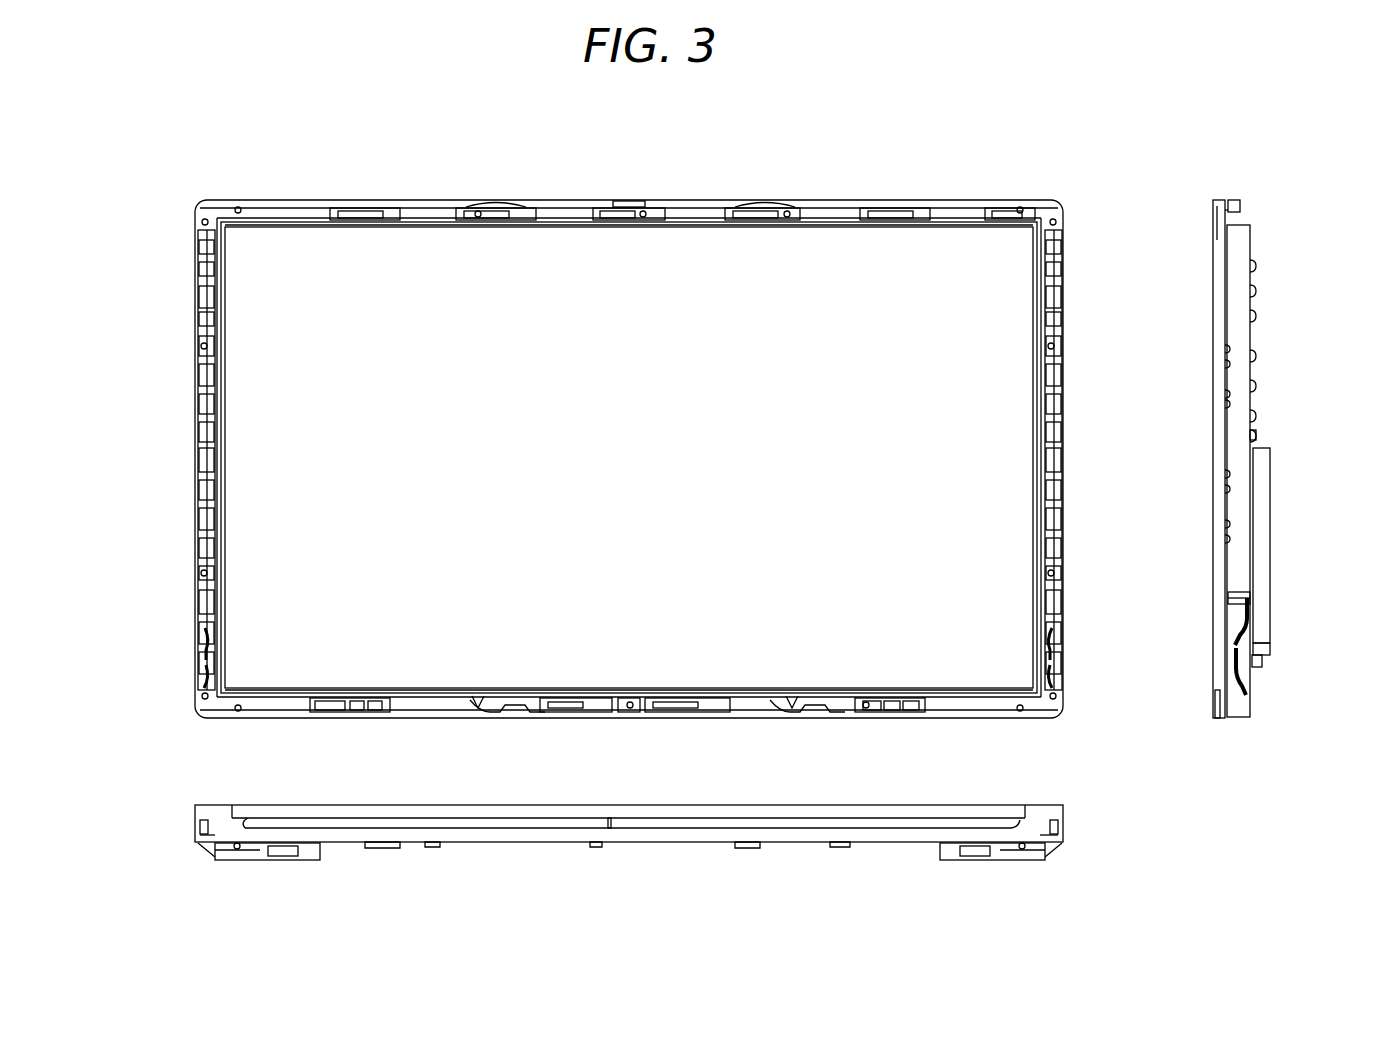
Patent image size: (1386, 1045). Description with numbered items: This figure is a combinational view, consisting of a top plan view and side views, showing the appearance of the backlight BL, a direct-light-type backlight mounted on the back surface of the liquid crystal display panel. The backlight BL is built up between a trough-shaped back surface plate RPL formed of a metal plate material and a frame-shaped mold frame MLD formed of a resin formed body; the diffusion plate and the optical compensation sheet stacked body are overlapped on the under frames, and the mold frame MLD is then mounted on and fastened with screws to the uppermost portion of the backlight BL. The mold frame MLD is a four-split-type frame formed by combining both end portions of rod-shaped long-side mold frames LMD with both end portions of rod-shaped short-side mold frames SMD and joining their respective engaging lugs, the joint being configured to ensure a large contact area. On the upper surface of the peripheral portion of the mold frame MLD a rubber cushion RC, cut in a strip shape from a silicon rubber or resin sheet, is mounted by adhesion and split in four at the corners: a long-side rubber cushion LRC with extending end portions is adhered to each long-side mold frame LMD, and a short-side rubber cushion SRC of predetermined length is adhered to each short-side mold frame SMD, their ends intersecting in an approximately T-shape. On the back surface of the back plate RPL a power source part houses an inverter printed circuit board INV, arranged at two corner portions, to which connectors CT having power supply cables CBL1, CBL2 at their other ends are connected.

The backlight BL is at (478, 197).
The rubber cushion RC is at (554, 225).
The long-side mold frame LMD is at (582, 212).
The long-side rubber cushion LRC is at (706, 226).
The mold frame MLD is at (793, 202).
The short-side rubber cushion SRC is at (226, 318).
The short-side mold frame SMD is at (213, 455).
The inverter printed circuit board INV is at (1270, 512).
The connector CT is at (1238, 596).
The power supply cable CBL1 is at (205, 640).
The power supply cable CBL2 is at (205, 680).
The back surface plate RPL is at (1240, 226).